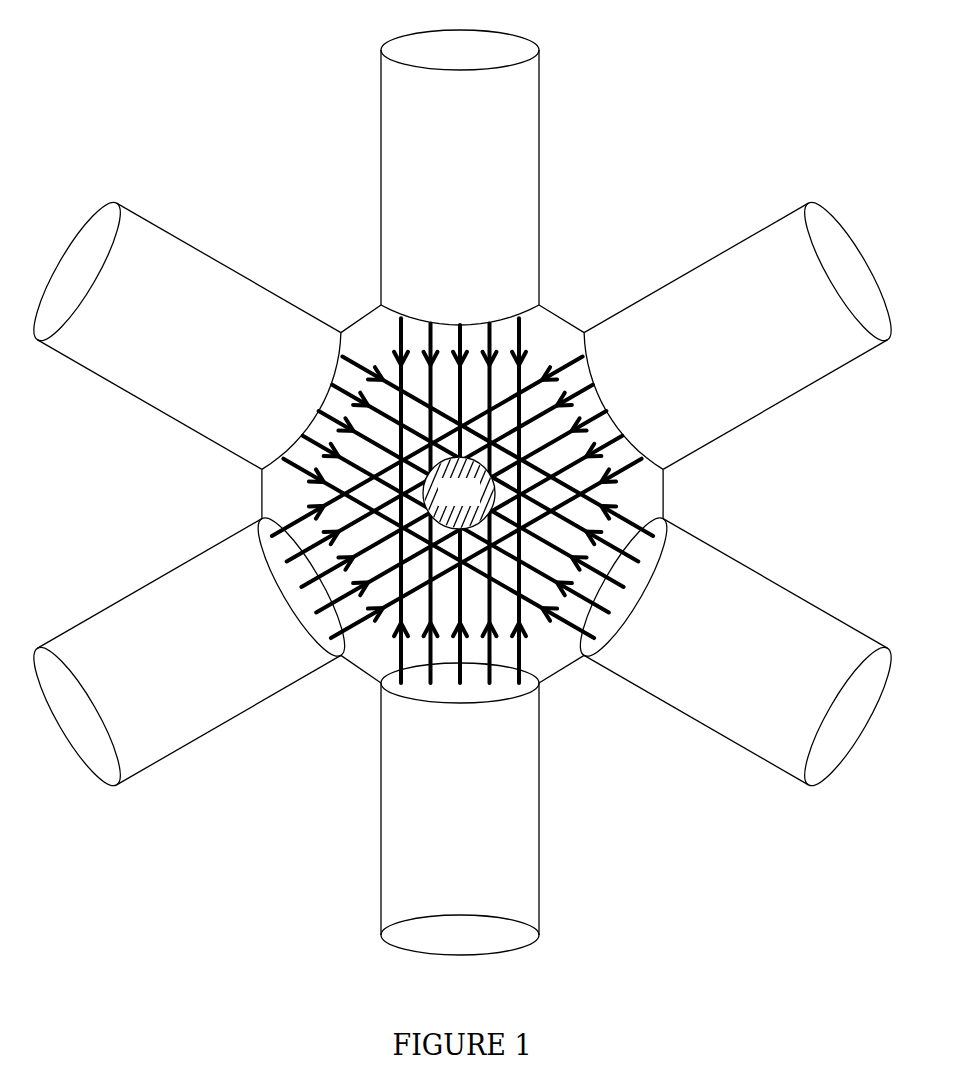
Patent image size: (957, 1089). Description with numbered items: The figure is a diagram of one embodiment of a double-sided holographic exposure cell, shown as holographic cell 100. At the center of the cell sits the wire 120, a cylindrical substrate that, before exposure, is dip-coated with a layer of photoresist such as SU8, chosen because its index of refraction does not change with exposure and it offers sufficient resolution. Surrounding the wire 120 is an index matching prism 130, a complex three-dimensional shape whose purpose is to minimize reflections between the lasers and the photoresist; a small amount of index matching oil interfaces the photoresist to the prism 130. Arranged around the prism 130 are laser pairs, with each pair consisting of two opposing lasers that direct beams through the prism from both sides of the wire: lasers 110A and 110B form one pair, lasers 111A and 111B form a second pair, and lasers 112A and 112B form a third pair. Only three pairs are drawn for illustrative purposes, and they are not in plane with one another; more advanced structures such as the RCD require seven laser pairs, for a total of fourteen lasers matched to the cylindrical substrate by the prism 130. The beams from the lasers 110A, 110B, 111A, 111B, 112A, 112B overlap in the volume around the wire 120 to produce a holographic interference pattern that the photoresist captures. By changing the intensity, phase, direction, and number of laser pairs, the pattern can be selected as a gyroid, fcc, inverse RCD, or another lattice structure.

The holographic cell 100 is at (752, 932).
The laser 110A is at (432, 200).
The laser 110B is at (432, 831).
The laser 111A is at (706, 348).
The laser 111B is at (158, 665).
The laser 112A is at (158, 348).
The laser 112B is at (706, 665).
The wire 120 is at (440, 503).
The index matching prism 130 is at (562, 313).